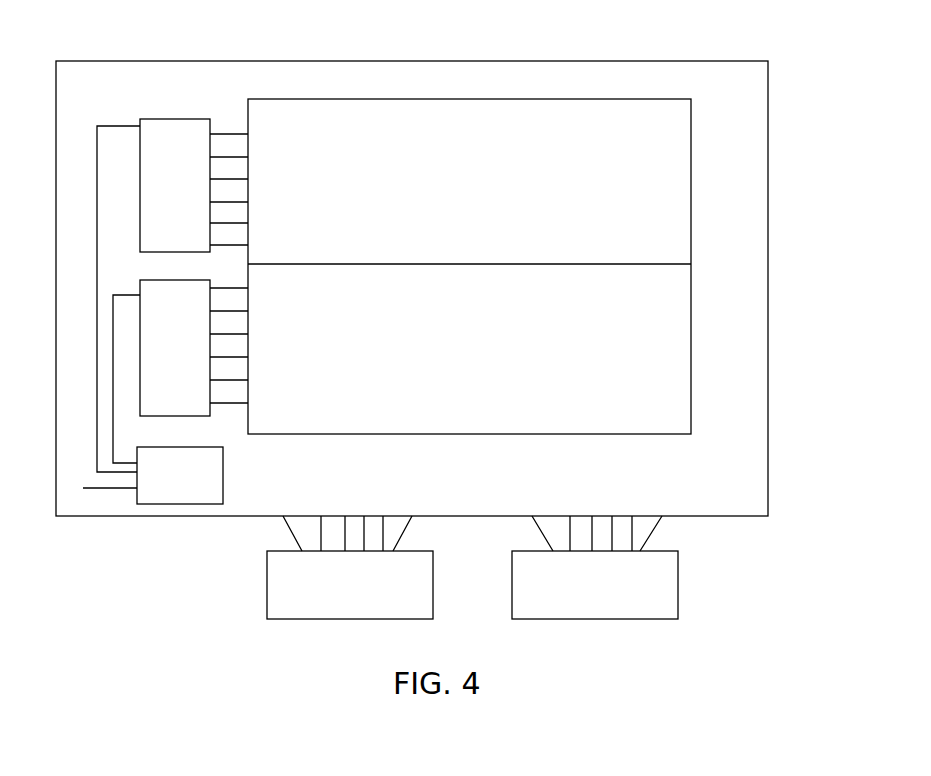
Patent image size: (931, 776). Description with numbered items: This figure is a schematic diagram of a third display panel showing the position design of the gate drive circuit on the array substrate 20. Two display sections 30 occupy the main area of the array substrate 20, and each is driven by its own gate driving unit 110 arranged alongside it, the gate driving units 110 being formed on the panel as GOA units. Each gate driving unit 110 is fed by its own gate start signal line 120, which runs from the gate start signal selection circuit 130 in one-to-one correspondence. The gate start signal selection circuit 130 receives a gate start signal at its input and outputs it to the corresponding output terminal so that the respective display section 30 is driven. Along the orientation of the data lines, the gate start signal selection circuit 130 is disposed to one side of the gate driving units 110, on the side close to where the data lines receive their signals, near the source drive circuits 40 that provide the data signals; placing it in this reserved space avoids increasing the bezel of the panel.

The array substrate 20 is at (747, 497).
The display section 30 is at (672, 198).
The source drive circuit 40 is at (472, 567).
The gate driving unit 110 is at (194, 267).
The gate start signal line 120 is at (102, 299).
The gate start signal selection circuit 130 is at (153, 475).